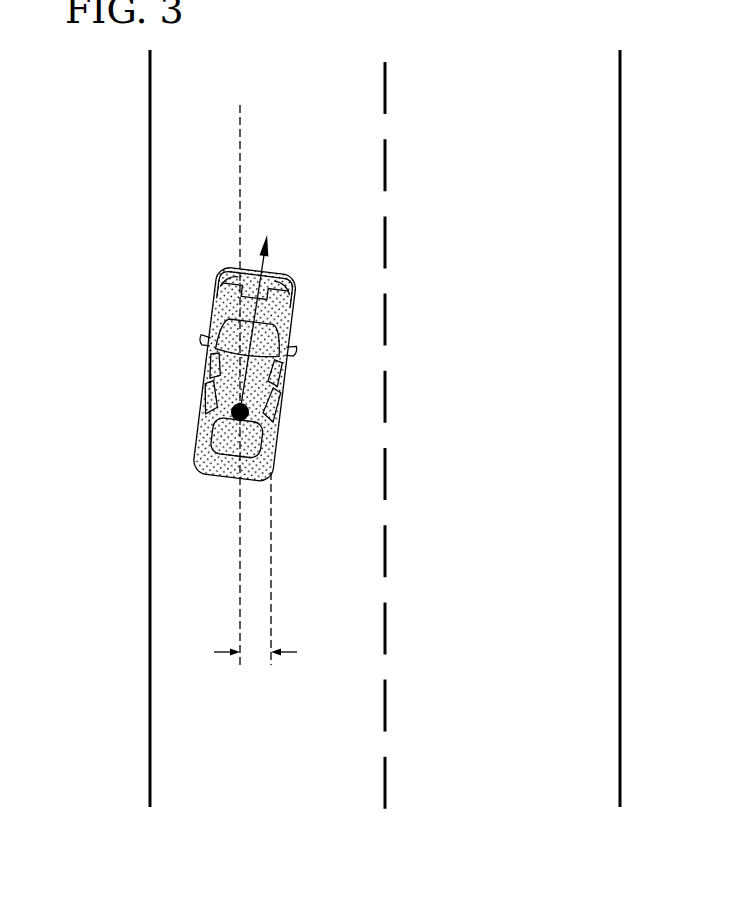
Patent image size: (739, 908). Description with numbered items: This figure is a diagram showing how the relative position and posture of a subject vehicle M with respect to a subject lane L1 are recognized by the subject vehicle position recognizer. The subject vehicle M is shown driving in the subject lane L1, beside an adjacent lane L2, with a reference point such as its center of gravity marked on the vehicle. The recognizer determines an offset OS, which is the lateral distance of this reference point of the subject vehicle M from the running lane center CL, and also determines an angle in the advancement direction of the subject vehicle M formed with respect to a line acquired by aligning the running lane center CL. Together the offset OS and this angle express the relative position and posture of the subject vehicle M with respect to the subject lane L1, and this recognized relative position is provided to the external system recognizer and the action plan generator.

The subject vehicle M is at (202, 392).
The running lane center CL is at (271, 551).
The offset OS is at (255, 675).
The subject lane L1 is at (264, 785).
The second lane (adjacent lane) L2 is at (506, 785).